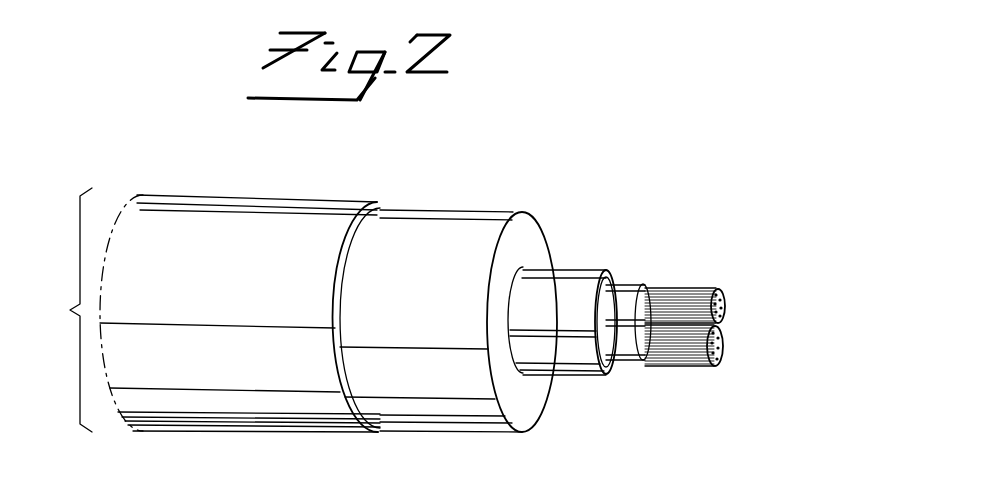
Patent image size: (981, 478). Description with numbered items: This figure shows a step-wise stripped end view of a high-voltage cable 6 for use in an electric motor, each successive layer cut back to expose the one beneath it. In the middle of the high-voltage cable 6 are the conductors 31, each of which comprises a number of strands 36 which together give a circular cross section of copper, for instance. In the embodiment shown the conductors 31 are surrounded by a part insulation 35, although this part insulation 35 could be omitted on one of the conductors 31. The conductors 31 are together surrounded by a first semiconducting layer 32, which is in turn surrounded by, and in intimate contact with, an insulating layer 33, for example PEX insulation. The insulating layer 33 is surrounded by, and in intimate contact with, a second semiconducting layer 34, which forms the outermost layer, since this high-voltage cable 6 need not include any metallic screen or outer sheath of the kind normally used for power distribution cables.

The high-voltage cable 6 is at (65, 310).
The conductors 31 is at (727, 325).
The first semiconducting layer 32 is at (582, 278).
The insulating layer 33 is at (463, 218).
The second semiconducting layer 34 is at (262, 210).
The part insulation 35 is at (627, 295).
The strands 36 is at (720, 345).